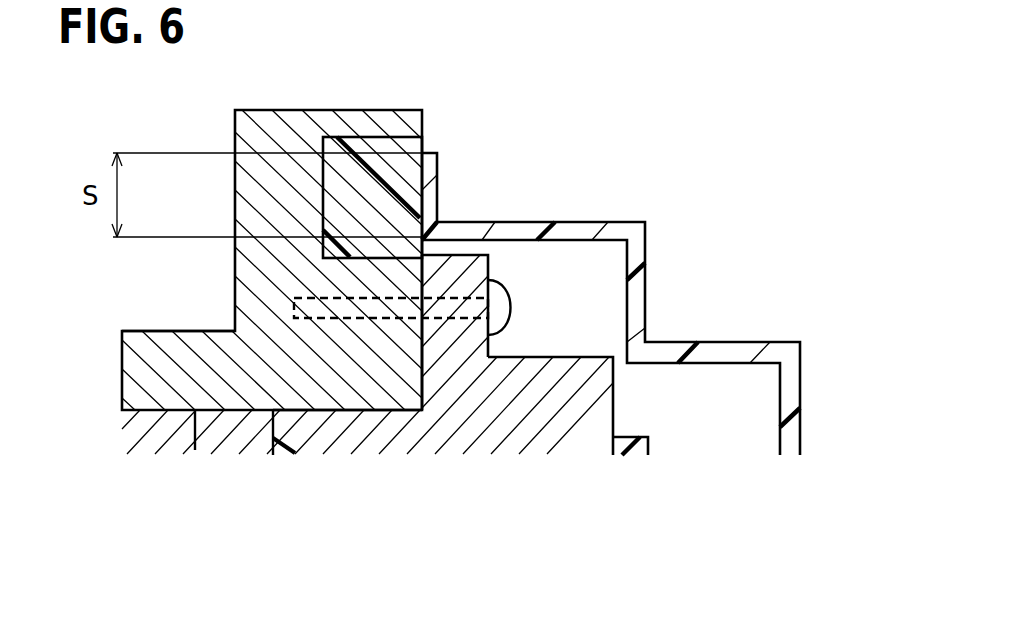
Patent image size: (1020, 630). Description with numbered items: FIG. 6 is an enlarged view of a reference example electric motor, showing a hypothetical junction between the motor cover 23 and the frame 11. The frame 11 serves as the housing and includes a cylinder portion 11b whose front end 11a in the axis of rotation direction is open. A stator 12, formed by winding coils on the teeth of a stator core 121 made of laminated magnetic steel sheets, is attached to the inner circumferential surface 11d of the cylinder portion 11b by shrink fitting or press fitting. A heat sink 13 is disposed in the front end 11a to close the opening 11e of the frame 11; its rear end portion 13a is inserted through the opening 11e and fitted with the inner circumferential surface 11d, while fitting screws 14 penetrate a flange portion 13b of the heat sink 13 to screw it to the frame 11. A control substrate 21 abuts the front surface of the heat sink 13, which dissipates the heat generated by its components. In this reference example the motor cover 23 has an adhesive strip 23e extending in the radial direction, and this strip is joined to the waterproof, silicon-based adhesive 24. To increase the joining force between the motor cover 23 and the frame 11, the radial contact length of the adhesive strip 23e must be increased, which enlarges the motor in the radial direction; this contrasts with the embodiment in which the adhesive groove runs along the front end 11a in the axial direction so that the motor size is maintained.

The frame 11 is at (133, 373).
The front end 11a is at (420, 377).
The cylinder portion 11b is at (150, 328).
The inner circumferential surface 11d is at (258, 412).
The opening 11e is at (362, 428).
The stator 12 is at (138, 440).
The stator core 121 is at (163, 442).
The heat sink 13 is at (558, 438).
The rear end portion 13a is at (322, 440).
The flange portion 13b is at (473, 270).
The fitting screw 14 is at (502, 308).
The control substrate 21 is at (638, 453).
The motor cover 23 is at (798, 392).
The adhesive strip 23e is at (433, 198).
The adhesive 24 is at (368, 145).